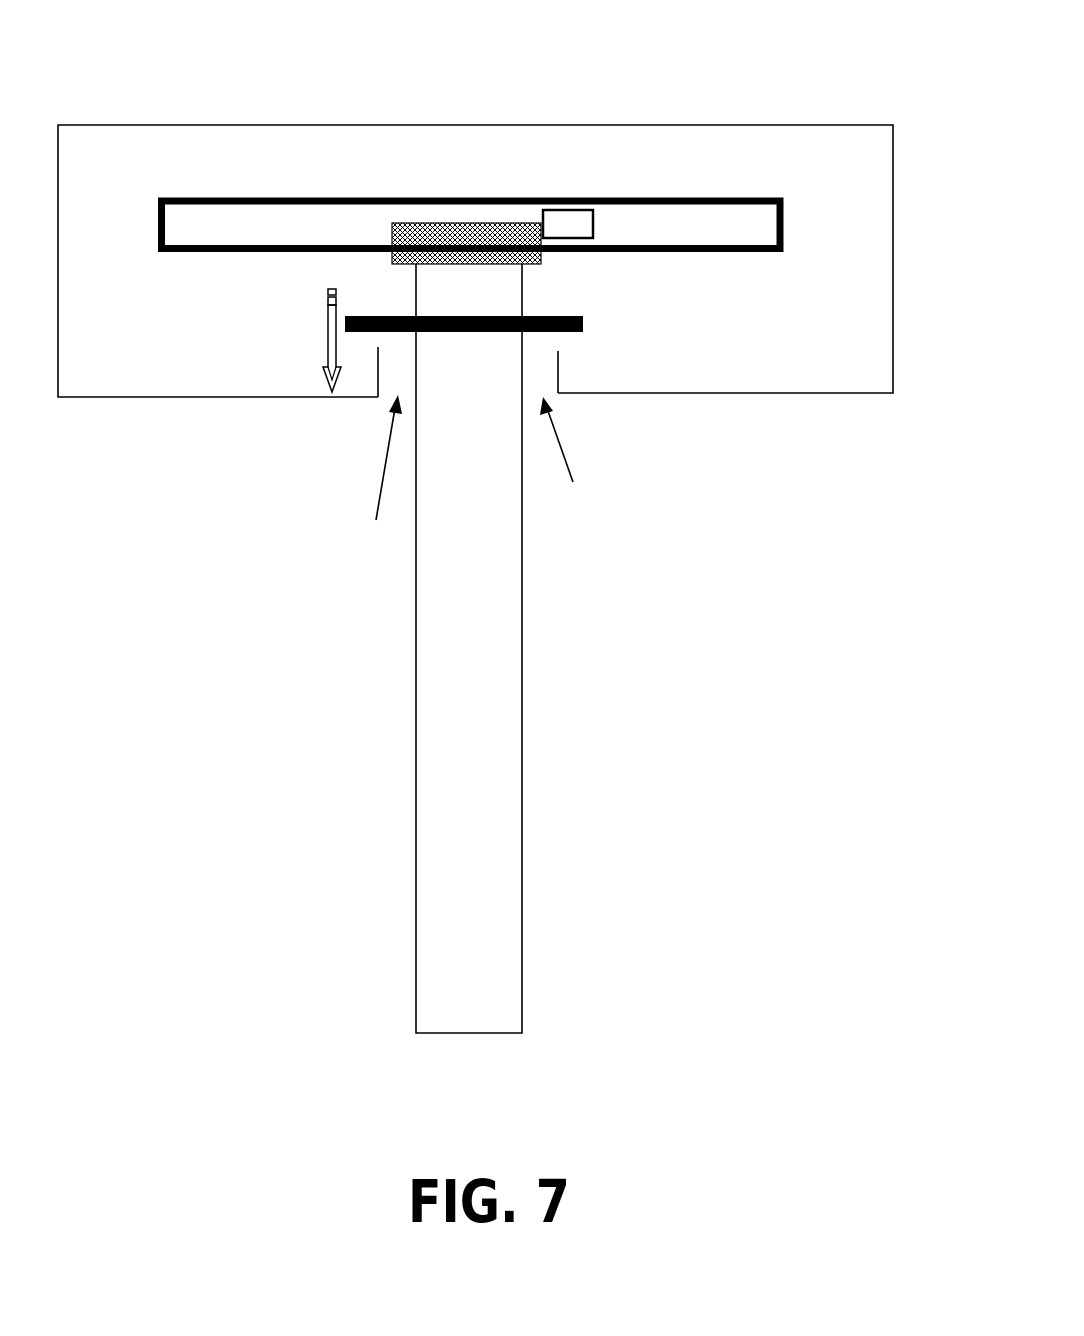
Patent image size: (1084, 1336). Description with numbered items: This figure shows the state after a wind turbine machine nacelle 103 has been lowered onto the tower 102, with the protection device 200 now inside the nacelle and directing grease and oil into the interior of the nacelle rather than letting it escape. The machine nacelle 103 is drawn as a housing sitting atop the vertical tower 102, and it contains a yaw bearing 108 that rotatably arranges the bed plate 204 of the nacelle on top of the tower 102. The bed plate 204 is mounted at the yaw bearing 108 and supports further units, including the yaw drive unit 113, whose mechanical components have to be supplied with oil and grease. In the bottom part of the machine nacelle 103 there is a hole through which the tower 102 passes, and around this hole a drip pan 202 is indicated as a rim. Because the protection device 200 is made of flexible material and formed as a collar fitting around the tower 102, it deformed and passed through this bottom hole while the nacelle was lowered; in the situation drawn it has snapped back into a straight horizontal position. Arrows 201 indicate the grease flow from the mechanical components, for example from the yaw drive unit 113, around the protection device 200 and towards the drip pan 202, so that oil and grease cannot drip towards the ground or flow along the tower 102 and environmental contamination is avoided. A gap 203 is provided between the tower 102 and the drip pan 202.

The tower 102 is at (522, 649).
The machine nacelle 103 is at (893, 393).
The yaw bearing 108 is at (415, 238).
The yaw drive unit 113 is at (576, 223).
The protection device 200 is at (585, 322).
The arrows 201 is at (328, 354).
The drip pan 202 is at (377, 378).
The gap 203 is at (468, 480).
The bed plate 204 is at (195, 198).